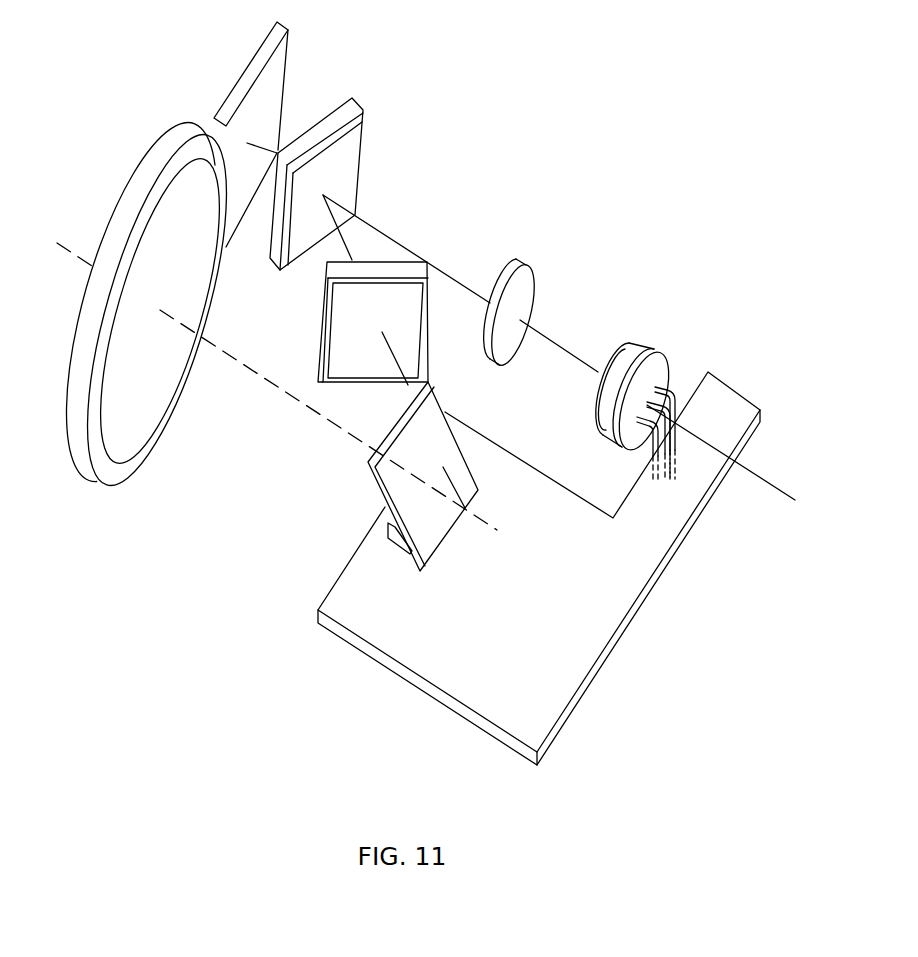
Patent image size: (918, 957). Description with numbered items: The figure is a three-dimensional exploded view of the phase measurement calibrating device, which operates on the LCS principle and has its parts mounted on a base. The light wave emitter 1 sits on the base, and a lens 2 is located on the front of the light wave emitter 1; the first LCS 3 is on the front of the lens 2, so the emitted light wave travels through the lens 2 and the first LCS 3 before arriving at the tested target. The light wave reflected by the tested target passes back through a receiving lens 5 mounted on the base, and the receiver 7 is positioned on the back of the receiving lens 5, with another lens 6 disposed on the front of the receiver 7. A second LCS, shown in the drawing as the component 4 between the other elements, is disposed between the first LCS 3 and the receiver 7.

The light wave emitter 1 is at (678, 338).
The lens 2 is at (551, 273).
The first LCS 3 is at (374, 164).
The frame / filter holder 4 is at (406, 248).
The receiving lens 5 is at (112, 508).
The lens 6 is at (358, 496).
The receiver 7 is at (374, 552).